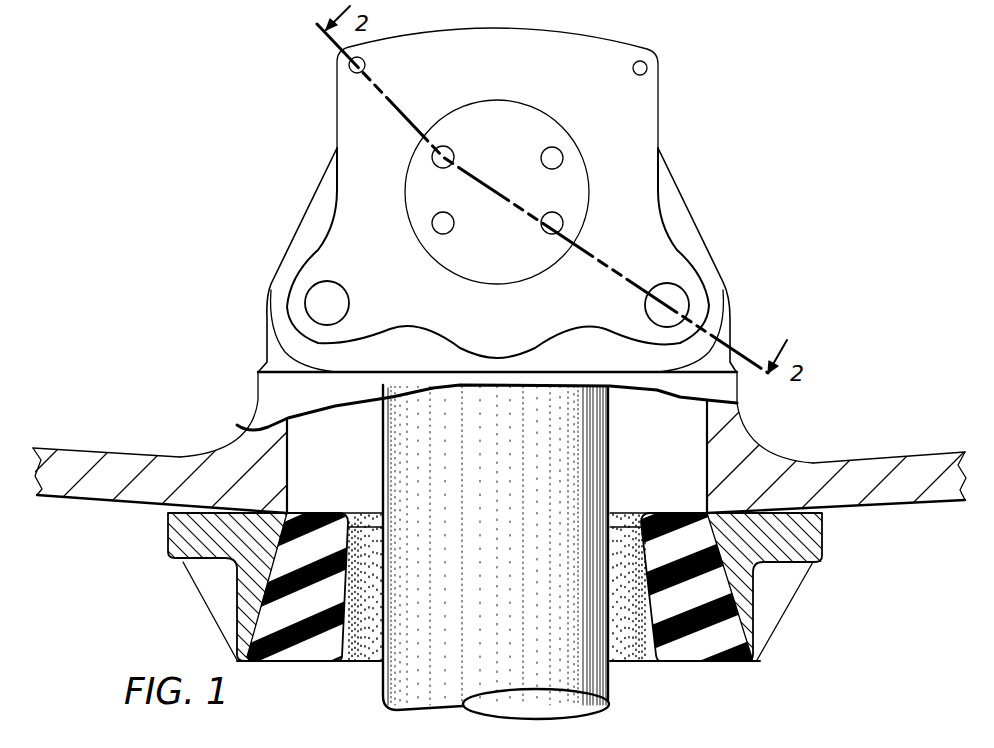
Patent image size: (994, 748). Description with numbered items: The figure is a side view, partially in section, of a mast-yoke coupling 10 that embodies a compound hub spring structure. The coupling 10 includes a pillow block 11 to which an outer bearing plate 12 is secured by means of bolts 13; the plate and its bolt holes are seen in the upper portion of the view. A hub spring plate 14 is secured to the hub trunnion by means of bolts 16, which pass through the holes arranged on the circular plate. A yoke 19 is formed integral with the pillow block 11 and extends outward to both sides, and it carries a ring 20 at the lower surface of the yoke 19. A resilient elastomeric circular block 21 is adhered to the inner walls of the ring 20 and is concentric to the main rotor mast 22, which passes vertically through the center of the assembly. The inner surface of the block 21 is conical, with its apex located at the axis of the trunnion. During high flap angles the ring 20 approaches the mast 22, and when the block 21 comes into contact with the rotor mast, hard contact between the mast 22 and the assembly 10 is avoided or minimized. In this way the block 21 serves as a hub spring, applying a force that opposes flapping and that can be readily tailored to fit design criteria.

The mast-yoke coupling 10 is at (806, 250).
The pillow block 11 is at (672, 250).
The outer bearing plate 12 is at (704, 320).
The bolts 13 is at (322, 307).
The hub spring plate 14 is at (533, 262).
The bolts 16 is at (435, 160).
The yoke 19 is at (120, 483).
The ring 20 is at (192, 537).
The resilient elastomeric circular block 21 is at (307, 643).
The main rotor mast 22 is at (553, 652).